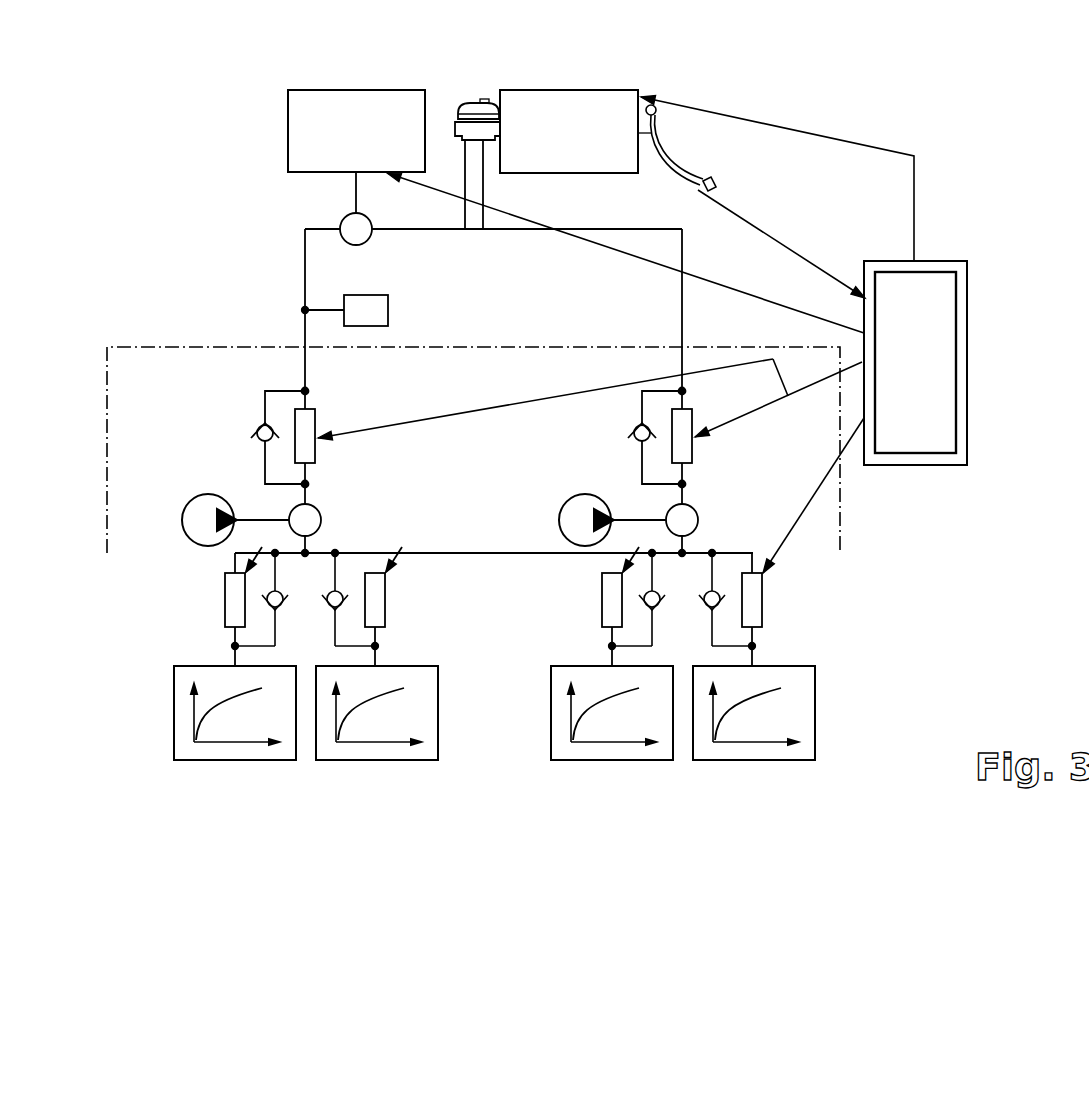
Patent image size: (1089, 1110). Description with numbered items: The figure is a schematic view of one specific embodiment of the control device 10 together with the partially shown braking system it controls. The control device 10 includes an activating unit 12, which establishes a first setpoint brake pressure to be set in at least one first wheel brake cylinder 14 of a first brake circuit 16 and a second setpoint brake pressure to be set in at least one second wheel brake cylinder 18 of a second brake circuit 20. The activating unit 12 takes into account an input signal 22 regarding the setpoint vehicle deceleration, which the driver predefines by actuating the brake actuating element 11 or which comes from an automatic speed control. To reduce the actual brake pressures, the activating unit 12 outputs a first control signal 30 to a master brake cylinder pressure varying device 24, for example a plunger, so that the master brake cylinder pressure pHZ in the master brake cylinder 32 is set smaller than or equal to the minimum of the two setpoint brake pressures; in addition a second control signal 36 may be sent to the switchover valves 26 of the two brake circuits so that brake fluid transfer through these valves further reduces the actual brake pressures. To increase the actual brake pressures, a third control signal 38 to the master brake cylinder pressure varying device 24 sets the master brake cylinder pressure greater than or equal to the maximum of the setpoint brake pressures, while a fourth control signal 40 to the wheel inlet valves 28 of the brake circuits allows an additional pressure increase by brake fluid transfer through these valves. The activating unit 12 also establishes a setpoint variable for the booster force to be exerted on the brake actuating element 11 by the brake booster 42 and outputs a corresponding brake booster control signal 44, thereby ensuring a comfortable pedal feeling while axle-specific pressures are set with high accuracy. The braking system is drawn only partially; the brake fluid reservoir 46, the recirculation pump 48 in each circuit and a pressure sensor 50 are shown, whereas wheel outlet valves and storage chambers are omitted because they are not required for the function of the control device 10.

The control device 10 is at (967, 360).
The brake actuating element 11 is at (684, 154).
The activating unit 12 is at (956, 303).
The first wheel brake cylinder 14 is at (612, 761).
The first brake circuit 16 is at (545, 636).
The second wheel brake cylinder 18 is at (233, 761).
The second brake circuit 20 is at (455, 695).
The input signal 22 is at (778, 243).
The master brake cylinder pressure varying device 24 is at (288, 127).
The switchover valve 26 is at (315, 458).
The wheel inlet valve 28 is at (225, 600).
The first control signal 30 is at (625, 253).
The master brake cylinder 32 is at (455, 127).
The second control signal 36 is at (745, 366).
The third control signal 38 is at (760, 295).
The fourth control signal 40 is at (820, 488).
The brake booster 42 is at (569, 90).
The brake booster control signal 44 is at (914, 172).
The brake fluid reservoir 46 is at (486, 103).
The recirculation pump 48 is at (182, 520).
The pressure sensor 50 is at (388, 311).
The master brake cylinder pressure pHZ is at (368, 240).